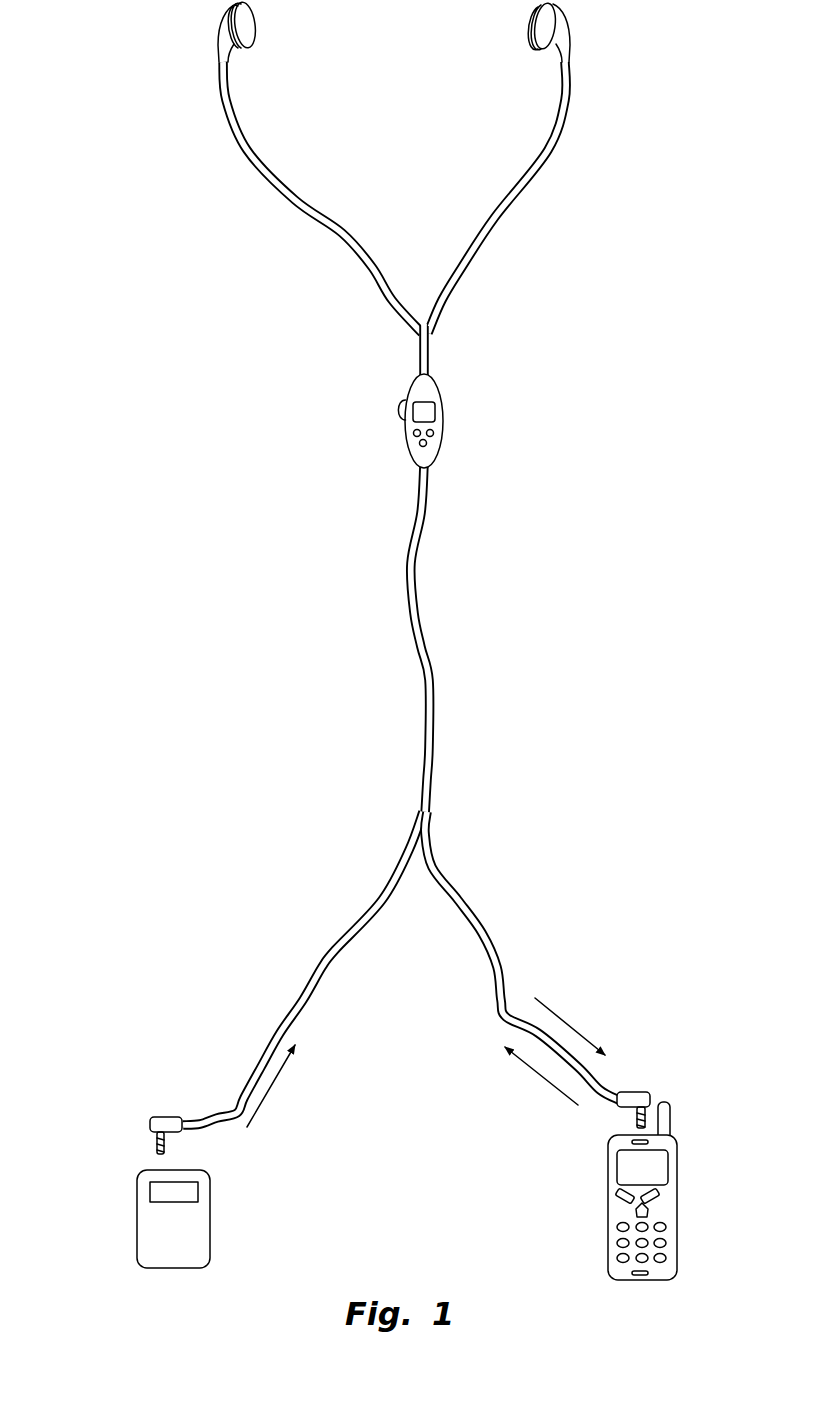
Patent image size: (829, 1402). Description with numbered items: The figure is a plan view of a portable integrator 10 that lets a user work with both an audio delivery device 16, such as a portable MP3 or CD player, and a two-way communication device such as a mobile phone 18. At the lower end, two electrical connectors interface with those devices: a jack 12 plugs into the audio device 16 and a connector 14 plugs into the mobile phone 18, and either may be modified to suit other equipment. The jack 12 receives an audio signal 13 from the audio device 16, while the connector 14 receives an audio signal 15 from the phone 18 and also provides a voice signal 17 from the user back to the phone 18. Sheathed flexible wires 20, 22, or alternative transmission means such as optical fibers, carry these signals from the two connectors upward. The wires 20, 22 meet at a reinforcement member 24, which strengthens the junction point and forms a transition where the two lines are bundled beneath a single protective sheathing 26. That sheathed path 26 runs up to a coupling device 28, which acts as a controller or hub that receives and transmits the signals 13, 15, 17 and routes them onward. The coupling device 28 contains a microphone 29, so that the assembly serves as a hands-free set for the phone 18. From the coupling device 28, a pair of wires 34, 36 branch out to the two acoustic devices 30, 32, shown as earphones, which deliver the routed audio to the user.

The portable integrator 10 is at (124, 111).
The jack 12 is at (165, 1122).
The audio signal 13 is at (273, 1083).
The connector 14 is at (633, 1095).
The audio signal 15 is at (540, 1075).
The audio delivery device 16 is at (213, 1217).
The voice signal 17 is at (575, 1027).
The mobile phone 18 is at (678, 1207).
The sheathed flexible wire 20 is at (310, 973).
The sheathed flexible wire 22 is at (483, 940).
The reinforcement member 24 is at (430, 808).
The protective sheathing 26 is at (427, 643).
The coupling device 28 is at (429, 419).
The microphone 29 is at (405, 433).
The acoustic device 30 is at (255, 30).
The acoustic device 32 is at (572, 32).
The wire 34 is at (277, 190).
The wire 36 is at (543, 160).